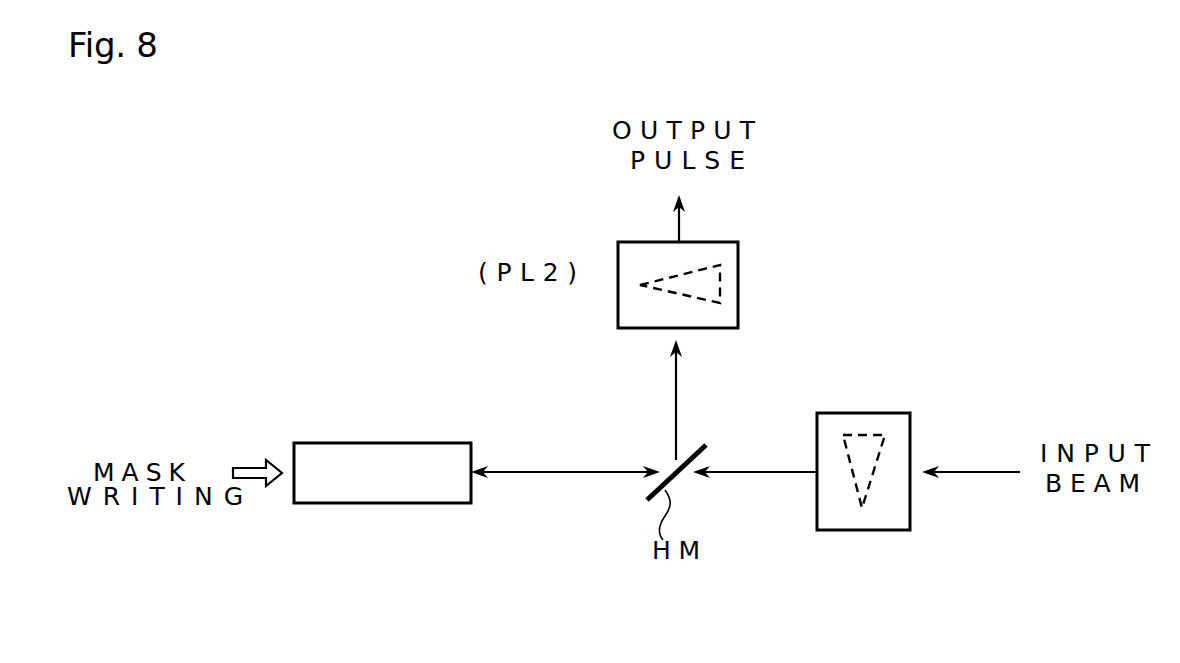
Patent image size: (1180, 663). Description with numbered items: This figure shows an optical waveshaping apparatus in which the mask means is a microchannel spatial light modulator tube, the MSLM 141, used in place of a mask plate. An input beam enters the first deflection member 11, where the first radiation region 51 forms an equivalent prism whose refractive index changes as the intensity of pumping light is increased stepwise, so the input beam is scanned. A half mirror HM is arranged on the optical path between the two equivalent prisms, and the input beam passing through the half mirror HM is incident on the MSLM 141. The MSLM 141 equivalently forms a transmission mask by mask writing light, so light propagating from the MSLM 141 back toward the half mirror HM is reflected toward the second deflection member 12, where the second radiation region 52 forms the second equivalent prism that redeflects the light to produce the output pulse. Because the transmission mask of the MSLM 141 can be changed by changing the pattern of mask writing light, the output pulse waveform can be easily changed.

The first deflection member 11 is at (875, 530).
The second deflection member 12 is at (738, 300).
The first radiation region 51 is at (880, 435).
The second radiation region 52 is at (645, 289).
The MSLM 141 is at (383, 443).